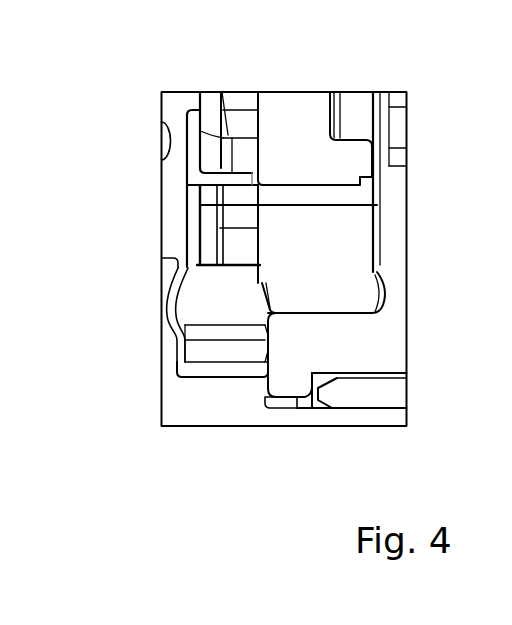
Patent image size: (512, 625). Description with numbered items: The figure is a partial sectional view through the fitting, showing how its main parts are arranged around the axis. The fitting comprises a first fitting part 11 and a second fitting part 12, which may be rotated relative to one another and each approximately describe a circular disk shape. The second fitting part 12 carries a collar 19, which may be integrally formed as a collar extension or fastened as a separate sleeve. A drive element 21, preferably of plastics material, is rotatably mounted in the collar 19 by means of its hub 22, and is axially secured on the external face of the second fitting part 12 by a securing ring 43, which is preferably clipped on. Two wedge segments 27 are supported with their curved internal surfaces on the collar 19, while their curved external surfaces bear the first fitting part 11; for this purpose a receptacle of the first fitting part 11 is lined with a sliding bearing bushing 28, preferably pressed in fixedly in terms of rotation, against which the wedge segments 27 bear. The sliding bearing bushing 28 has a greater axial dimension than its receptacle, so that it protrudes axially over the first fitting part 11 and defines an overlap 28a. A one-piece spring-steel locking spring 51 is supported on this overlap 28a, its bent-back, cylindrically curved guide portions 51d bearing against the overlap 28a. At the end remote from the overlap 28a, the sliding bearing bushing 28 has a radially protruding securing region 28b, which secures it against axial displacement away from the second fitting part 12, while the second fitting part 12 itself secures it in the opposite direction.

The first fitting part 11 is at (308, 89).
The second fitting part 12 is at (409, 320).
The collar 19 is at (328, 353).
The drive element 21 is at (159, 392).
The hub 22 is at (318, 418).
The wedge segments 27 is at (350, 232).
The sliding bearing bushing 28 is at (327, 179).
The overlap 28a is at (247, 197).
The securing region 28b is at (363, 189).
The securing ring 43 is at (393, 397).
The locking spring 51 is at (177, 142).
The guide portions 51d is at (213, 177).